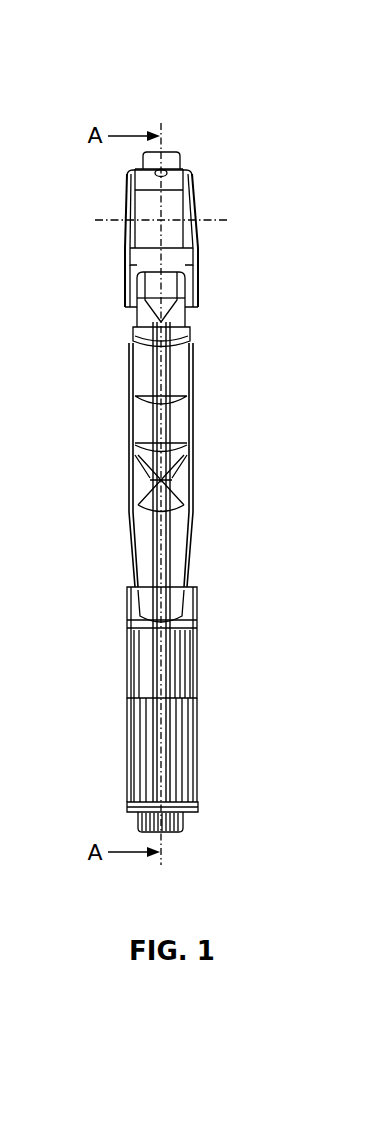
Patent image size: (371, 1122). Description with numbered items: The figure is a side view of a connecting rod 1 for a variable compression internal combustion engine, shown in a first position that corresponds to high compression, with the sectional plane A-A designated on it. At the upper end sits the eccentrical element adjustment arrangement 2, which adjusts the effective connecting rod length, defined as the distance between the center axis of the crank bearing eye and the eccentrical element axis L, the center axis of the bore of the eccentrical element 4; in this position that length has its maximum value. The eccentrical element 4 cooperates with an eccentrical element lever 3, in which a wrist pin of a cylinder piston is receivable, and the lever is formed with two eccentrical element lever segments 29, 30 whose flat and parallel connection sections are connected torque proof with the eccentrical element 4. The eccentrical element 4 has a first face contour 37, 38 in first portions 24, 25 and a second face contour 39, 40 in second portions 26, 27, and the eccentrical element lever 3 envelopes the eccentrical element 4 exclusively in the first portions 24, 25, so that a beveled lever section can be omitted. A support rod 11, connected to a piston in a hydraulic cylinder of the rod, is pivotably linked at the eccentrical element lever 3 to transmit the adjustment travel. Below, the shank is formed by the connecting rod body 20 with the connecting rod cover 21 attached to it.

The connecting rod 1 is at (309, 165).
The eccentrical element adjustment arrangement 2 is at (214, 153).
The eccentrical element lever 3 is at (116, 311).
The eccentrical element 4 is at (112, 237).
The support rod 11 is at (193, 328).
The connecting rod body 20 is at (180, 640).
The connecting rod cover 21 is at (178, 760).
The first portion 24 is at (112, 269).
The first portion 25 is at (216, 268).
The second portion 26 is at (112, 193).
The second portion 27 is at (214, 194).
The eccentrical element lever segment 29 is at (138, 312).
The eccentrical element lever segment 30 is at (193, 302).
The first face contour 37 is at (124, 272).
The first face contour 38 is at (200, 282).
The second face contour 39 is at (120, 182).
The second face contour 40 is at (200, 184).
The eccentrical element axis L is at (215, 233).